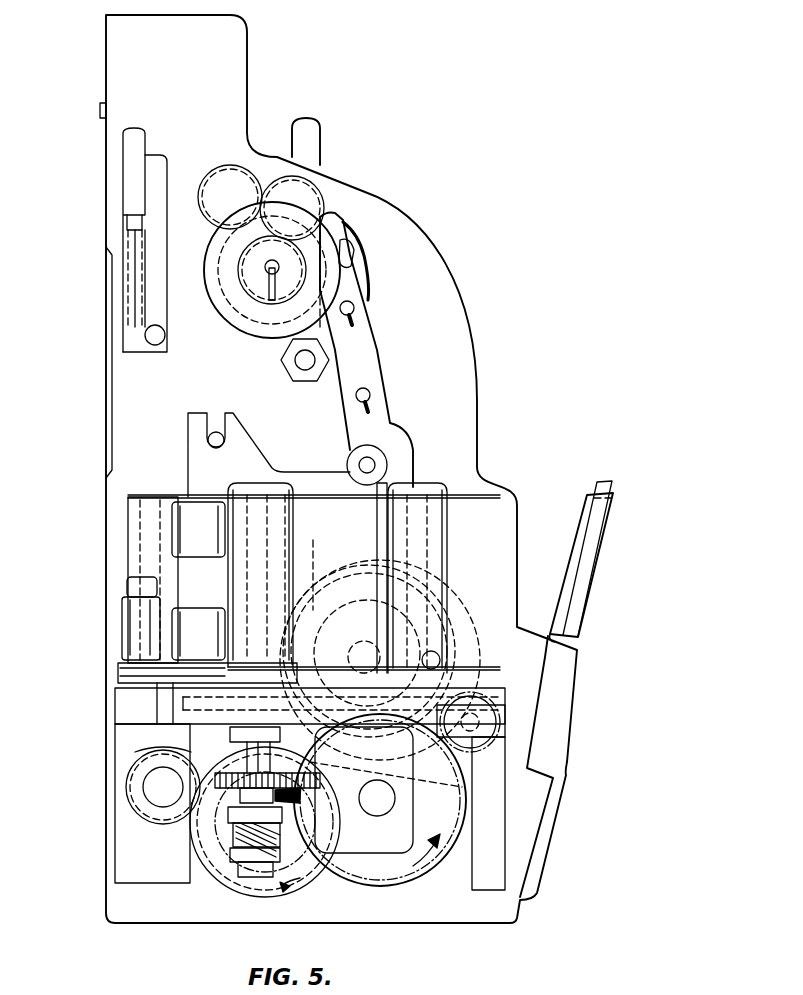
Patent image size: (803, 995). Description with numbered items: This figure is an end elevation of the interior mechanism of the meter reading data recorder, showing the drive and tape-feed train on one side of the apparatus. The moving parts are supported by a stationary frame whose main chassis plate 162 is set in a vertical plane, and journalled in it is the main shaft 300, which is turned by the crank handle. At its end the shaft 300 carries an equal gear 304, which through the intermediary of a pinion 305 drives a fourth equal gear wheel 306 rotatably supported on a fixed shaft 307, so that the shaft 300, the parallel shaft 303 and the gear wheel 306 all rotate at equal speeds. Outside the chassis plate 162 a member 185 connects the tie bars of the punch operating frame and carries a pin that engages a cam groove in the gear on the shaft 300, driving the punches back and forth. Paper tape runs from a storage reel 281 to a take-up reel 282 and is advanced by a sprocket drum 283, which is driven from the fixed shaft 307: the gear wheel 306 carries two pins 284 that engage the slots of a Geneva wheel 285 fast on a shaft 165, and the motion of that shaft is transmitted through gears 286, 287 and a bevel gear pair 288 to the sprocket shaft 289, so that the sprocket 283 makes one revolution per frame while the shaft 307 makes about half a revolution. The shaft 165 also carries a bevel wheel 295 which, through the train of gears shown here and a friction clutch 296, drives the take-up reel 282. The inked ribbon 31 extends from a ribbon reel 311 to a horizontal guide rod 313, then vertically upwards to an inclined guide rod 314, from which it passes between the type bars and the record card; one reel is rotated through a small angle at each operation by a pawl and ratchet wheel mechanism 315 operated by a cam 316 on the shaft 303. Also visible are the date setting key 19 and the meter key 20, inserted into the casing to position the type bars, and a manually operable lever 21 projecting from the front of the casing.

The date setting key 19 is at (565, 590).
The meter key 20 is at (580, 591).
The manually operable lever 21 is at (312, 133).
The inked ribbon 31 is at (227, 250).
The main chassis plate 162 is at (478, 370).
The shaft 165 is at (287, 862).
The member 185 is at (383, 550).
The storage reel 281 is at (417, 510).
The take-up reel 282 is at (243, 497).
The sprocket drum 283 is at (138, 535).
The pin 284 is at (392, 773).
The Geneva wheel 285 is at (285, 862).
The gear 286 is at (248, 878).
The gear 287 is at (180, 826).
The bevel gear pair 288 is at (135, 770).
The sprocket shaft 289 is at (130, 712).
The bevel wheel 295 is at (347, 887).
The friction clutch 296 is at (215, 875).
The shaft 300 is at (350, 653).
The shaft 303 is at (358, 466).
The gear 304 is at (483, 641).
The pinion 305 is at (478, 712).
The gear wheel 306 is at (400, 882).
The fixed shaft 307 is at (380, 810).
The ribbon reel 311 is at (258, 327).
The horizontal guide rod 313 is at (150, 344).
The inclined guide rod 314 is at (123, 190).
The pawl and ratchet wheel mechanism 315 is at (343, 222).
The cam 316 is at (360, 457).